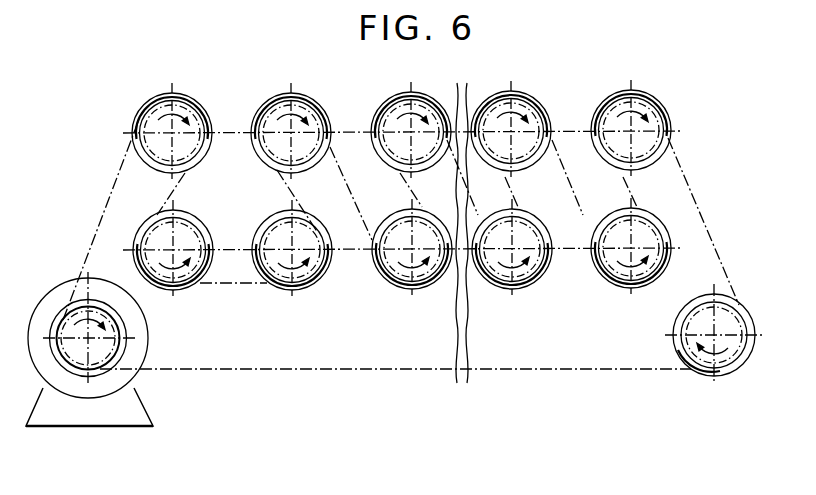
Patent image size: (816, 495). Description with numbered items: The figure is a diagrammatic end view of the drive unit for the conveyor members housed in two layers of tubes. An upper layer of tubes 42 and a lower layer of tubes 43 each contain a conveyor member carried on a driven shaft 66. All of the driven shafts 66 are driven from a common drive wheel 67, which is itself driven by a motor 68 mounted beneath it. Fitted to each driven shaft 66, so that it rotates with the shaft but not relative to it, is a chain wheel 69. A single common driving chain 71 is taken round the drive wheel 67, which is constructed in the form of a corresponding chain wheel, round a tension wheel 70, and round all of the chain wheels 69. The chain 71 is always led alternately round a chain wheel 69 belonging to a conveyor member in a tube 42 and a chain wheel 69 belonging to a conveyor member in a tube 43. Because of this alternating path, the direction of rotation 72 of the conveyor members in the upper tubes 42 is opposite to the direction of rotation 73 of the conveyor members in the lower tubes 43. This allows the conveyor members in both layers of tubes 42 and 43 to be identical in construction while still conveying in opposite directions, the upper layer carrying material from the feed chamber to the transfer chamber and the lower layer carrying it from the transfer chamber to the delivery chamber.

The tube 42 is at (135, 120).
The tube 43 is at (137, 235).
The driven shaft 66 is at (402, 125).
The chain wheel 69 is at (423, 102).
The direction of rotation 72 is at (175, 115).
The direction of rotation 73 is at (182, 275).
The drive wheel 67 is at (82, 347).
The motor 68 is at (106, 390).
The tension wheel 70 is at (724, 340).
The driving chain 71 is at (521, 370).